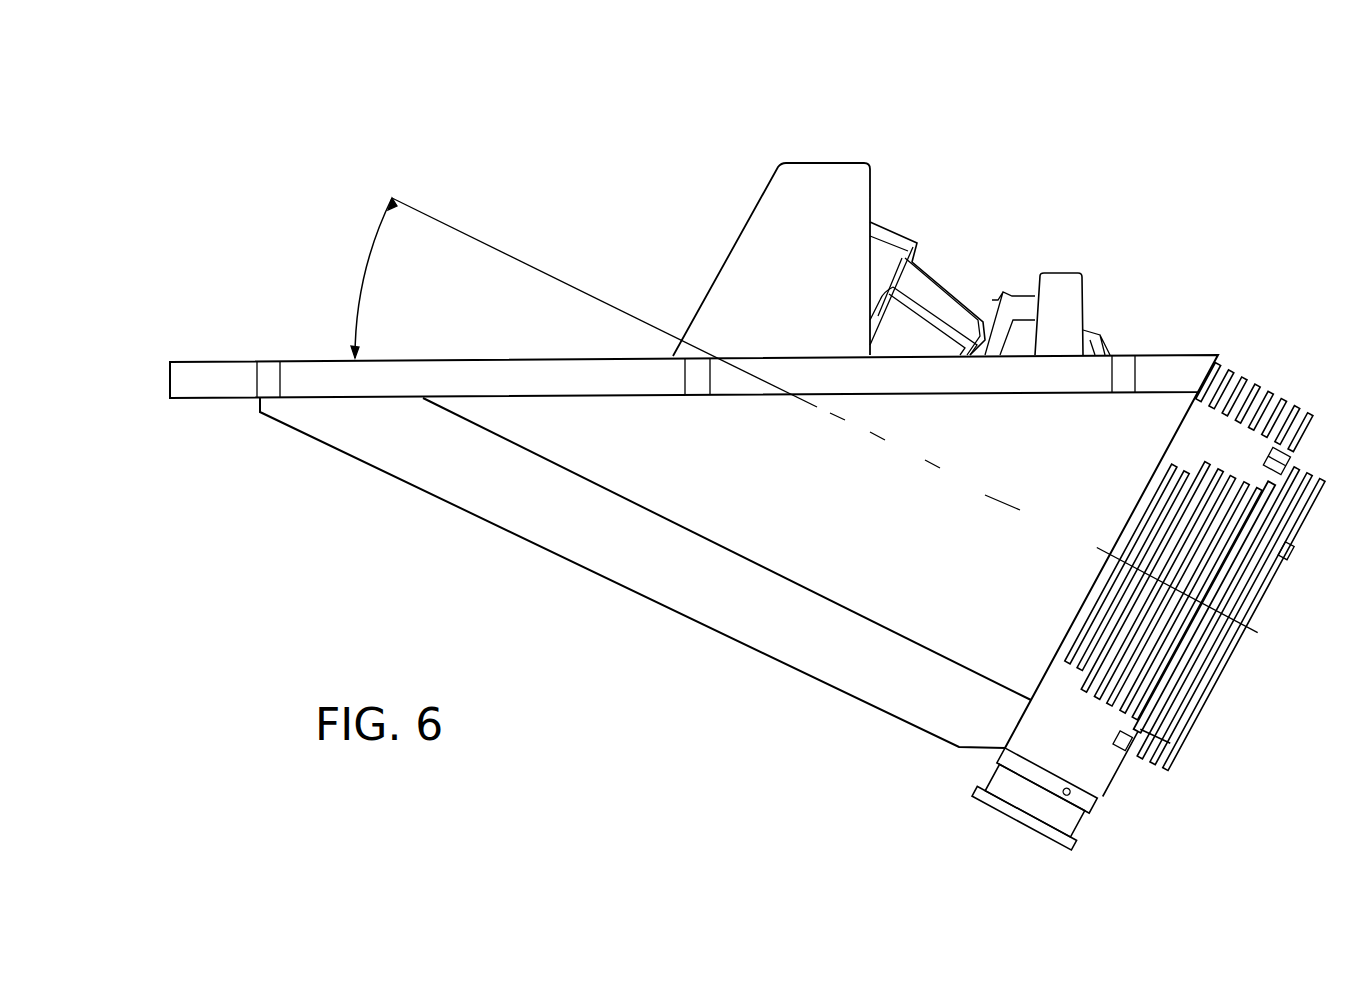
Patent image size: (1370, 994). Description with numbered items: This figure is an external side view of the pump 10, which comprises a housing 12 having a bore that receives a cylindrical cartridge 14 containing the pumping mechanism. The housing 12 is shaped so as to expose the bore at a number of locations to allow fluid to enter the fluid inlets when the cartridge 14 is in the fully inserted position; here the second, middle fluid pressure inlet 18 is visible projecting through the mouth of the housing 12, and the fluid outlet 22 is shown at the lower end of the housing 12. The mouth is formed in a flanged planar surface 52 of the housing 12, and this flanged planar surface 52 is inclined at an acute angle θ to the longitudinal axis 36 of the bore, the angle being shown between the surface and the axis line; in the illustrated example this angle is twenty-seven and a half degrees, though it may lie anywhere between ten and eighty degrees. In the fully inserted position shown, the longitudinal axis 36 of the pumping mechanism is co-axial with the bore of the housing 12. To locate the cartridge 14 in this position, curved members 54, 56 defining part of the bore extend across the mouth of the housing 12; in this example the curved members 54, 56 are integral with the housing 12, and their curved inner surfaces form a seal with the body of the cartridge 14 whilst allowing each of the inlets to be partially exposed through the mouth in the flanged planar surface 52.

The pump 10 is at (893, 142).
The housing 12 is at (656, 567).
The cylindrical cartridge 14 is at (1008, 307).
The second fluid inlet 18 is at (947, 278).
The fluid outlet 22 is at (1004, 805).
The longitudinal axis of the pumping mechanism 36 is at (540, 268).
The flanged planar surface 52 is at (198, 362).
The curved member 54 is at (777, 228).
The curved member 56 is at (1063, 298).